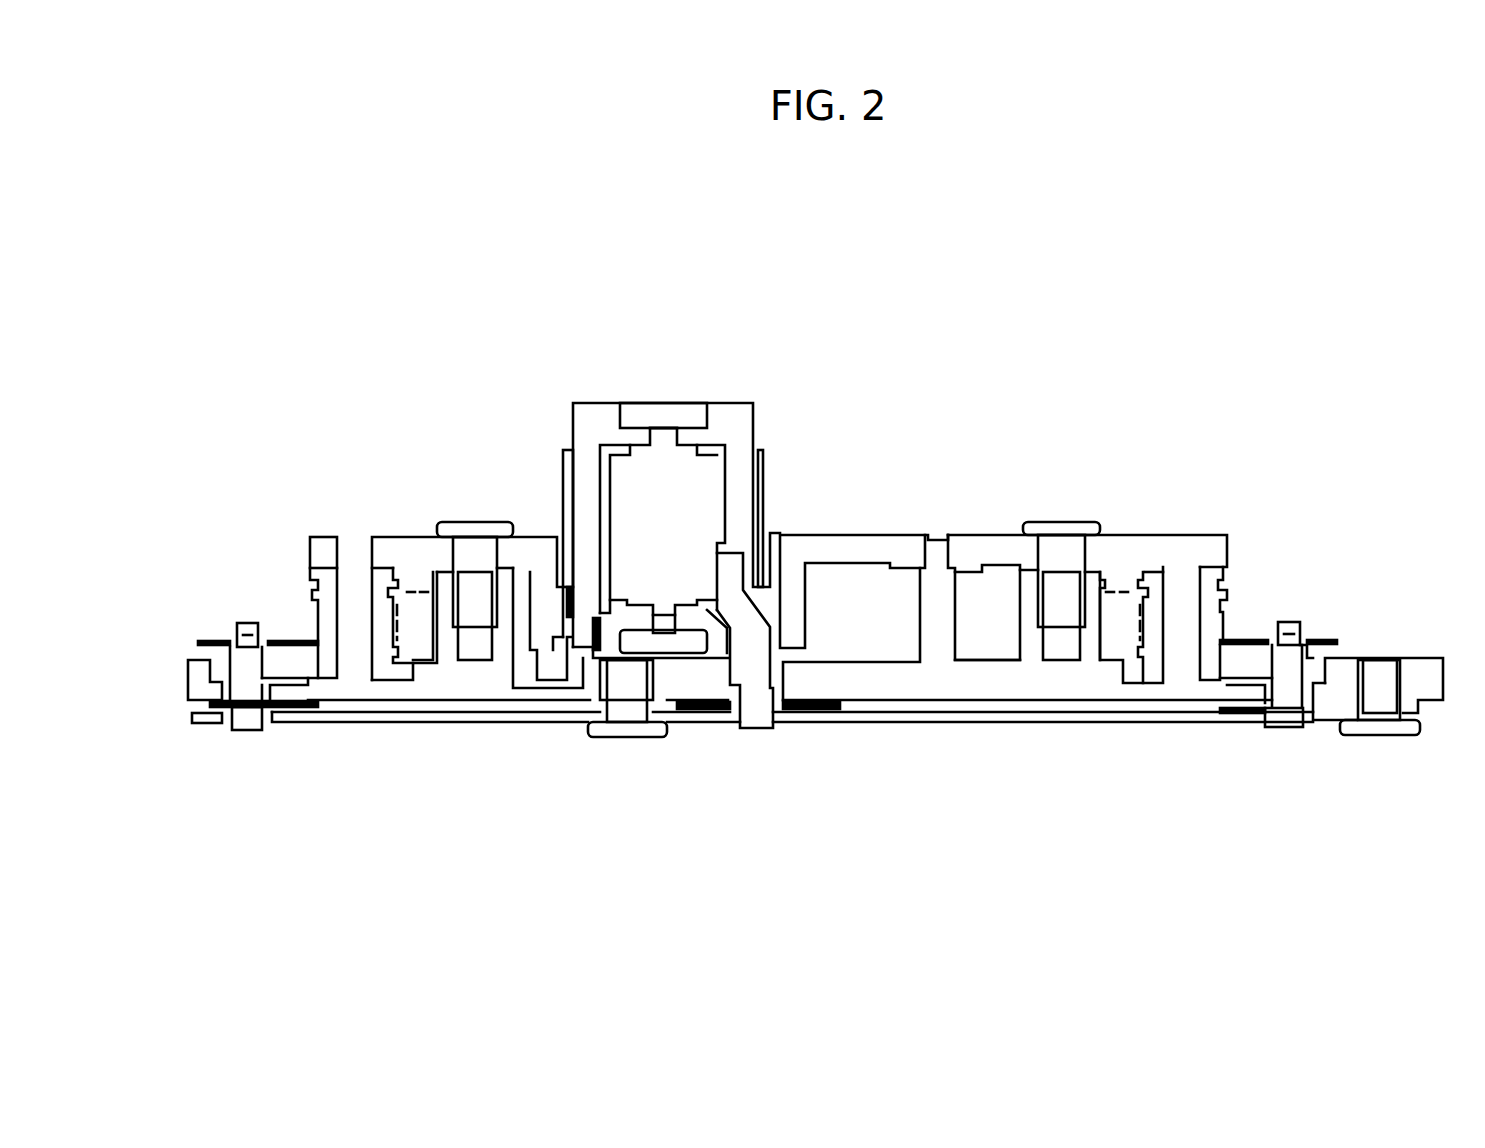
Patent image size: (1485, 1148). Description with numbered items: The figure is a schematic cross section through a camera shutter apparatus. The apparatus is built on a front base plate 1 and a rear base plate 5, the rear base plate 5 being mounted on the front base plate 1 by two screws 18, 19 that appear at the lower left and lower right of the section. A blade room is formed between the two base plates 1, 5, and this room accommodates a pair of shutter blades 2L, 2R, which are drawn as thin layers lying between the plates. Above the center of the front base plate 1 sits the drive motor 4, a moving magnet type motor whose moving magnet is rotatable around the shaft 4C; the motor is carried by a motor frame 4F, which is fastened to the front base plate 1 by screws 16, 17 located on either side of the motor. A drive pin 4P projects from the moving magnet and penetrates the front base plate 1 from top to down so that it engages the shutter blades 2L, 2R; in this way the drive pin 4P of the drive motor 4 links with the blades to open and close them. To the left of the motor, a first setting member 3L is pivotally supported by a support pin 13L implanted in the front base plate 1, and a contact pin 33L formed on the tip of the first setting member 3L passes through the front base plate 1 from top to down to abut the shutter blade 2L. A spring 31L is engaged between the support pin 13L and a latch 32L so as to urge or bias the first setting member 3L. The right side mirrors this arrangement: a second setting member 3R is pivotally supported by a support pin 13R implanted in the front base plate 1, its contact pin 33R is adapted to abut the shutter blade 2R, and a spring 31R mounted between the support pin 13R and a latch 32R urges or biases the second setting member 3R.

The front base plate 1 is at (940, 688).
The shutter blade 2L is at (297, 708).
The shutter blade 2R is at (815, 710).
The first setting member 3L is at (325, 612).
The second setting member 3R is at (1213, 612).
The drive motor 4 is at (702, 490).
The shaft 4C is at (665, 440).
The motor frame 4F is at (848, 552).
The drive pin 4P is at (750, 724).
The rear base plate 5 is at (1102, 718).
The support pin 13L is at (357, 537).
The support pin 13R is at (1185, 585).
The screw 16 is at (1063, 532).
The screw 17 is at (478, 535).
The screw 18 is at (1378, 732).
The screw 19 is at (627, 733).
The spring 31L is at (405, 590).
The spring 31R is at (1140, 590).
The latch 32L is at (245, 623).
The latch 32R is at (1290, 622).
The contact pin 33L is at (245, 716).
The contact pin 33R is at (1290, 722).